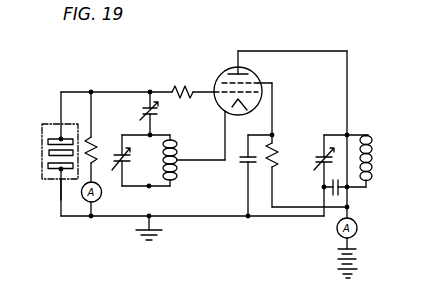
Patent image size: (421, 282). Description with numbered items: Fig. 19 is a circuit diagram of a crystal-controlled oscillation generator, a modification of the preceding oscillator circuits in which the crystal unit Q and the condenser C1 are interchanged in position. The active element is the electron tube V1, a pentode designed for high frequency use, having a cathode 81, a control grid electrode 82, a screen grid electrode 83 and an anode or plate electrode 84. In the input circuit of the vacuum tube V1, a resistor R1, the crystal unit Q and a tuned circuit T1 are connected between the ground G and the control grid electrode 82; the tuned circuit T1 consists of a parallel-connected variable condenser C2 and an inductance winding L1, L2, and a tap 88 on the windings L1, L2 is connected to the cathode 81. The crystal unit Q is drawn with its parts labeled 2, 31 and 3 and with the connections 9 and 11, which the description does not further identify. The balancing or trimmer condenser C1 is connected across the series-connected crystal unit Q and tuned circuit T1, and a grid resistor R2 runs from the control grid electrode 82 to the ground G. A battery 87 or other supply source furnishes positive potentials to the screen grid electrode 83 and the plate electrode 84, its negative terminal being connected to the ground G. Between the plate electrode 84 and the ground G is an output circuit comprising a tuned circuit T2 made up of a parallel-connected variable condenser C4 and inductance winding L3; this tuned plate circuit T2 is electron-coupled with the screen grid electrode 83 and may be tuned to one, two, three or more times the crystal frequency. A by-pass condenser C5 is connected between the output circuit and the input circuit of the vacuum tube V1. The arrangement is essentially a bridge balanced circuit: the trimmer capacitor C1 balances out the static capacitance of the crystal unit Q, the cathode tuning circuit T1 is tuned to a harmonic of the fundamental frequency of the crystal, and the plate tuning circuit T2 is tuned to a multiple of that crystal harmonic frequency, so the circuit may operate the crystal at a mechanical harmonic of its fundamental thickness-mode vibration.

The input lead 9 is at (60, 96).
The crystal unit Q is at (56, 123).
The upper electrode 2 is at (48, 141).
The crystal 31 is at (49, 151).
The lower electrode 3 is at (48, 166).
The lead 11 is at (61, 194).
The grid resistor R2 is at (93, 140).
The balancing or trimmer condenser C1 is at (142, 111).
The variable condenser C2 is at (141, 160).
The inductance winding L1 is at (174, 143).
The inductance winding L2 is at (174, 178).
The tap 88 is at (178, 160).
The tuned circuit T1 is at (161, 167).
The resistor R1 is at (188, 91).
The electron tube V1 is at (226, 74).
The anode or plate electrode 84 is at (248, 74).
The screen grid electrode 83 is at (268, 83).
The control grid electrode 82 is at (256, 92).
The cathode 81 is at (237, 107).
The by-pass condenser C5 is at (244, 161).
The variable condenser C4 is at (317, 158).
The tuned circuit T2 is at (343, 160).
The inductance winding L3 is at (371, 168).
The battery 87 is at (338, 251).
The ground G is at (352, 276).